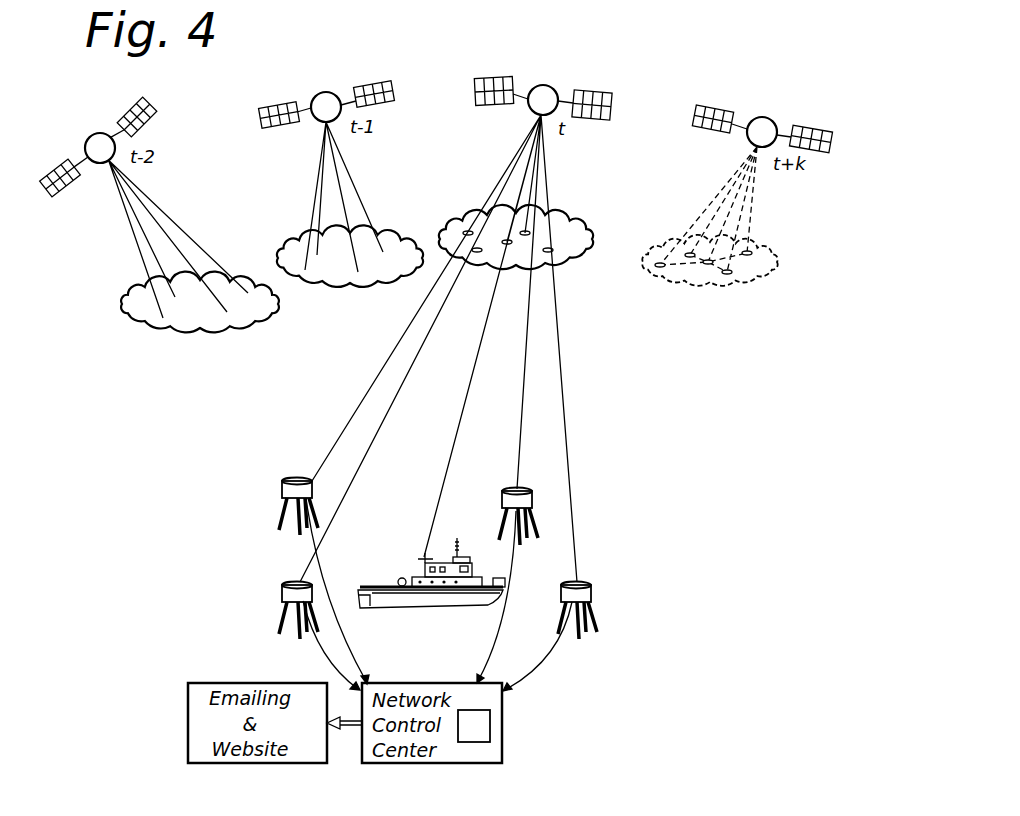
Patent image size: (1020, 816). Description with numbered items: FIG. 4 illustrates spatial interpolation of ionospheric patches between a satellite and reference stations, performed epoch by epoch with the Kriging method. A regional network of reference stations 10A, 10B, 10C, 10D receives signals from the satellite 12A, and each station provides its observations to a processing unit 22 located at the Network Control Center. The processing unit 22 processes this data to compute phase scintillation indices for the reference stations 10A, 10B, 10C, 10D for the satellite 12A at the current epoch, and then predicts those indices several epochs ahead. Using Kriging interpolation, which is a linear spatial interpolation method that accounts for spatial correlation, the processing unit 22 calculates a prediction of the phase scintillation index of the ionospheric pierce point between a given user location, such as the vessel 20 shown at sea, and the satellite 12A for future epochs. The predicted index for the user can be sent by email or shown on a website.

The satellite 12A is at (99, 160).
The reference station 10A is at (285, 492).
The reference station 10B is at (532, 502).
The reference station 10C is at (591, 591).
The reference station 10D is at (282, 592).
The ship 20 is at (387, 593).
The processing unit 22 is at (478, 728).